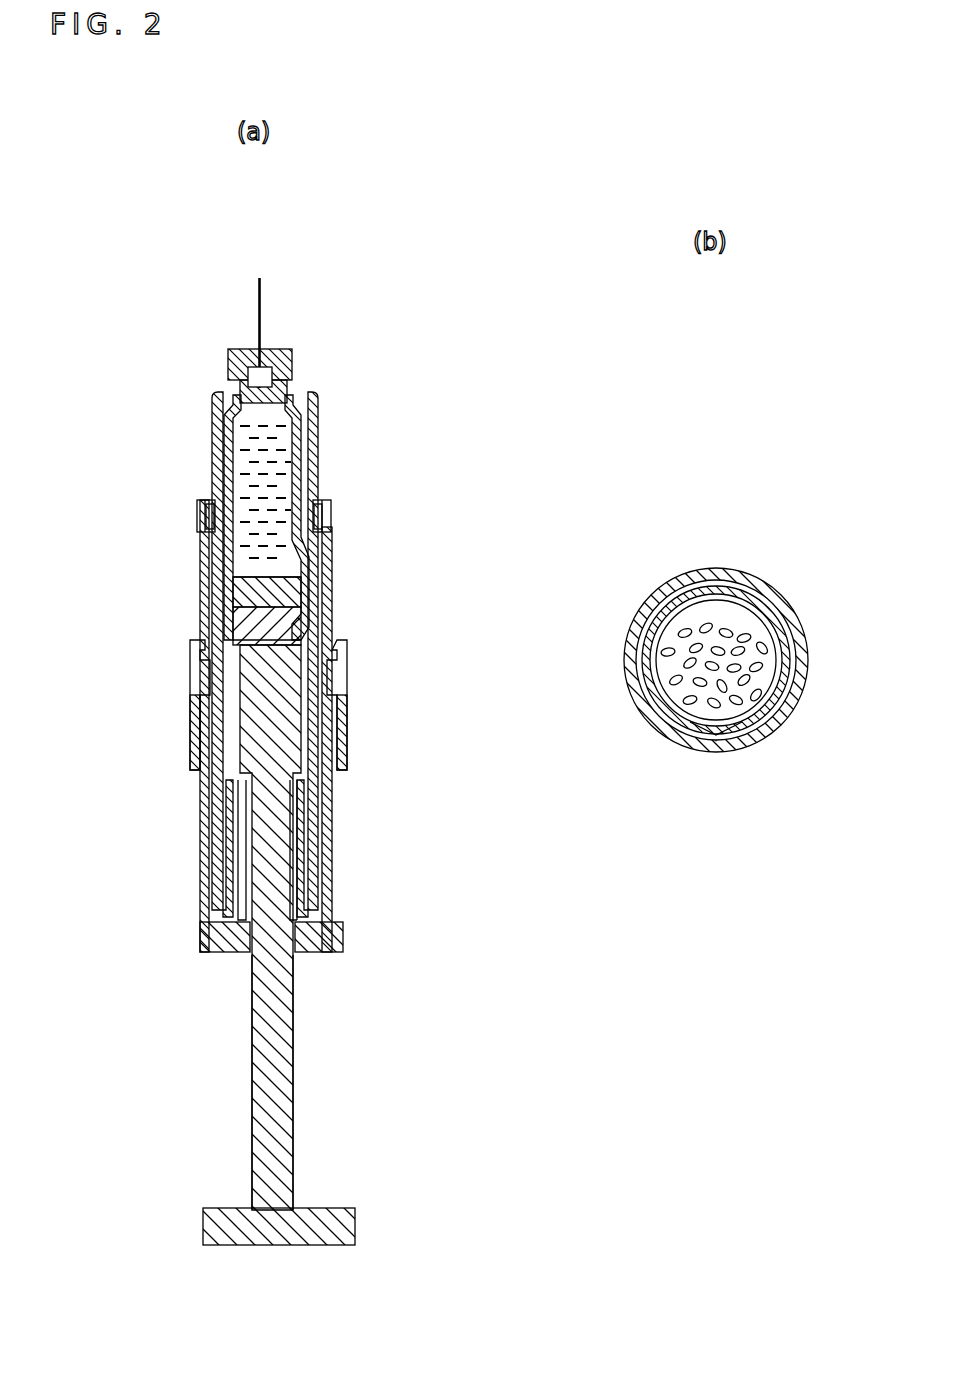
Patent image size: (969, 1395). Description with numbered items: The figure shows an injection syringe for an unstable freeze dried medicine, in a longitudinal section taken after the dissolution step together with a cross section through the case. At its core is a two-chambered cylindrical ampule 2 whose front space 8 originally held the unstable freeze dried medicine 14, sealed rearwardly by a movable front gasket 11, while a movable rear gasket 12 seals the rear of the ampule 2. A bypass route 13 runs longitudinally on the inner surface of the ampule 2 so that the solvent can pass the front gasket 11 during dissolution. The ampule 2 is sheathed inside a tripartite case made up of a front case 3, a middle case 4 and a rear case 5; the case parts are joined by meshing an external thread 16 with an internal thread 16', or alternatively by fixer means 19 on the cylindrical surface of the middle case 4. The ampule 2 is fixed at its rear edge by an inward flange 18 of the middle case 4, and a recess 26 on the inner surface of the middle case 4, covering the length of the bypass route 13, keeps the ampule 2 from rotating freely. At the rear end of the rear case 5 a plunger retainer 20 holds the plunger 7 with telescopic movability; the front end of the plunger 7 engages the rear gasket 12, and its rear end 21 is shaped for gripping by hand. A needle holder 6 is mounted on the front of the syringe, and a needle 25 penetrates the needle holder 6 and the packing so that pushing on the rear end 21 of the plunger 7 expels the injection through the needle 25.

The multi-chambered cylindrical ampule 2 is at (662, 724).
The front case 3 is at (318, 457).
The middle case 4 is at (318, 620).
The rear case 5 is at (333, 795).
The needle holder 6 is at (292, 356).
The plunger 7 is at (287, 1058).
The front space 8 is at (228, 460).
The front gasket 11 is at (230, 592).
The rear gasket 12 is at (240, 618).
The bypass route 13 is at (310, 580).
The unstable freeze dried medicine 14 is at (763, 650).
The thread 16 is at (200, 510).
The thread 16' is at (196, 521).
The inward flange 18 is at (316, 923).
The fixer means 19 is at (200, 662).
The plunger retainer 20 is at (216, 935).
The rear end 21 is at (208, 1228).
The needle 25 is at (262, 306).
The recess 26 is at (740, 746).